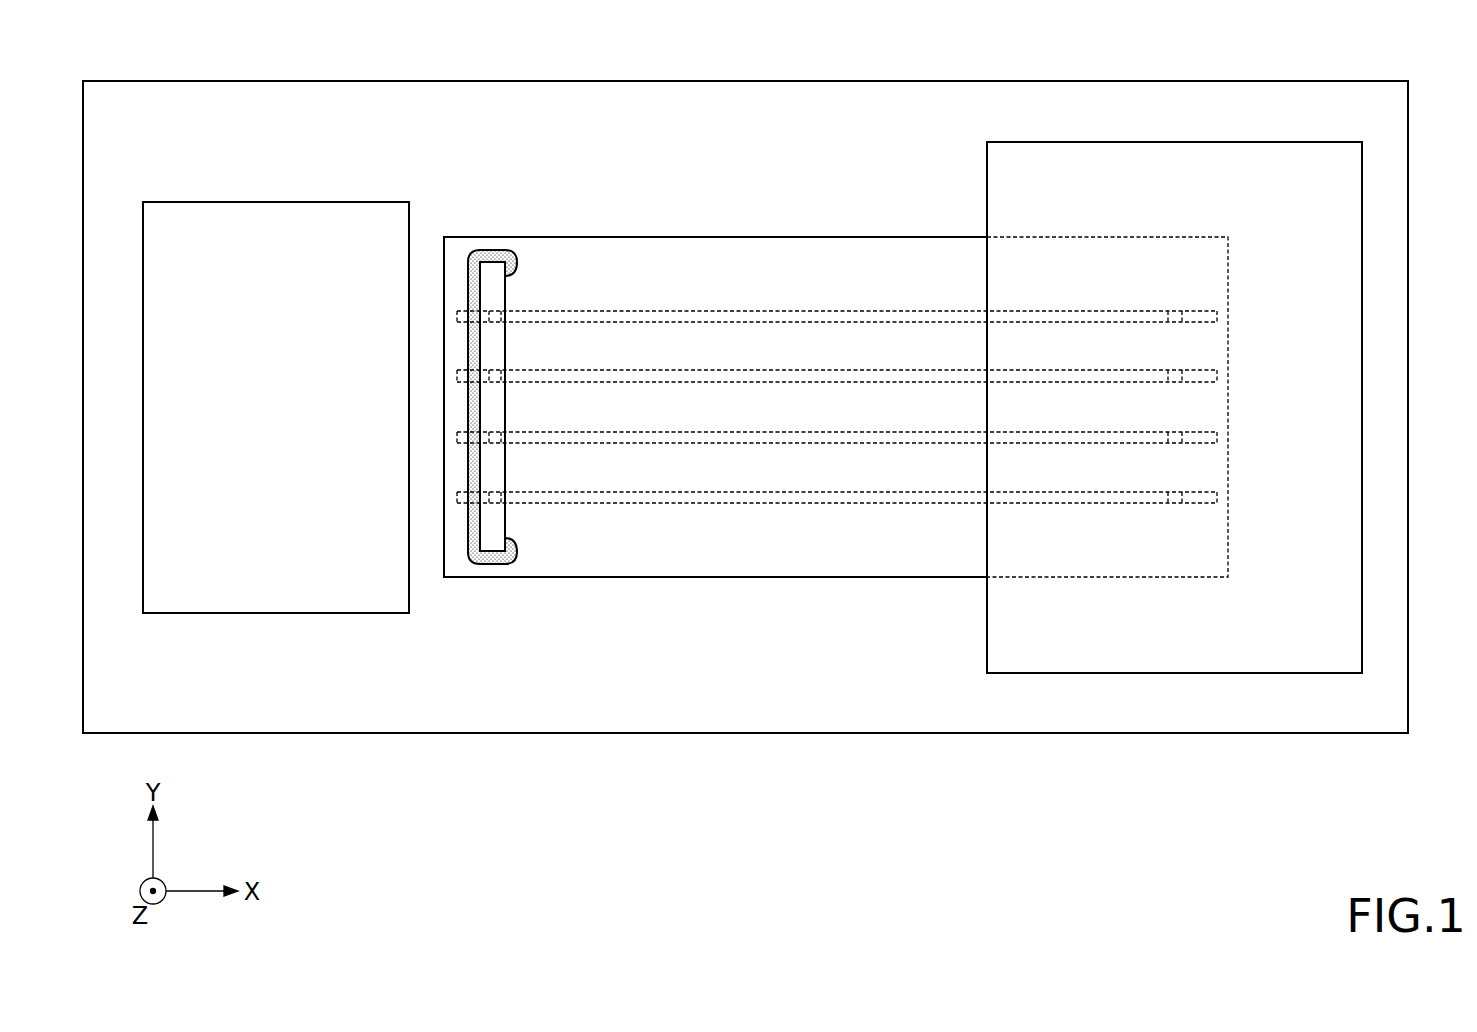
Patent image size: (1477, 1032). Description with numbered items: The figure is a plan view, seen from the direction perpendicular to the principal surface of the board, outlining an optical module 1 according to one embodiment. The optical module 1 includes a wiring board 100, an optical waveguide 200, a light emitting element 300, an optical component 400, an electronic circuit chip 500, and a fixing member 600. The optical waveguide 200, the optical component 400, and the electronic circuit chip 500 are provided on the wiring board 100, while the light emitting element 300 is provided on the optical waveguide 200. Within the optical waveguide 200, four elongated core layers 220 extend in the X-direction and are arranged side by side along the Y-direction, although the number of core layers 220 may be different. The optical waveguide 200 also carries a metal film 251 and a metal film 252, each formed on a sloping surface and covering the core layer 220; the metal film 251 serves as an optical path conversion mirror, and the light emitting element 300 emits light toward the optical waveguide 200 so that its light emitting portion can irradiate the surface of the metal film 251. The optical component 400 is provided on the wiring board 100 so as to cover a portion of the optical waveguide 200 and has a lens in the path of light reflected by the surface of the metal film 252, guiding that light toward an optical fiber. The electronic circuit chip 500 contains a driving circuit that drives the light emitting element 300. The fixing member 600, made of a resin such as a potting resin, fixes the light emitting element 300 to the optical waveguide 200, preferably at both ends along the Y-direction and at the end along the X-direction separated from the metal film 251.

The optical module 1 is at (1390, 47).
The wiring board 100 is at (922, 715).
The optical waveguide 200 is at (773, 250).
The core layer 220 is at (755, 502).
The metal film 251 is at (518, 312).
The metal film 252 is at (1150, 316).
The light emitting element 300 is at (500, 518).
The optical component 400 is at (1222, 627).
The electronic circuit chip 500 is at (304, 587).
The fixing member 600 is at (480, 250).